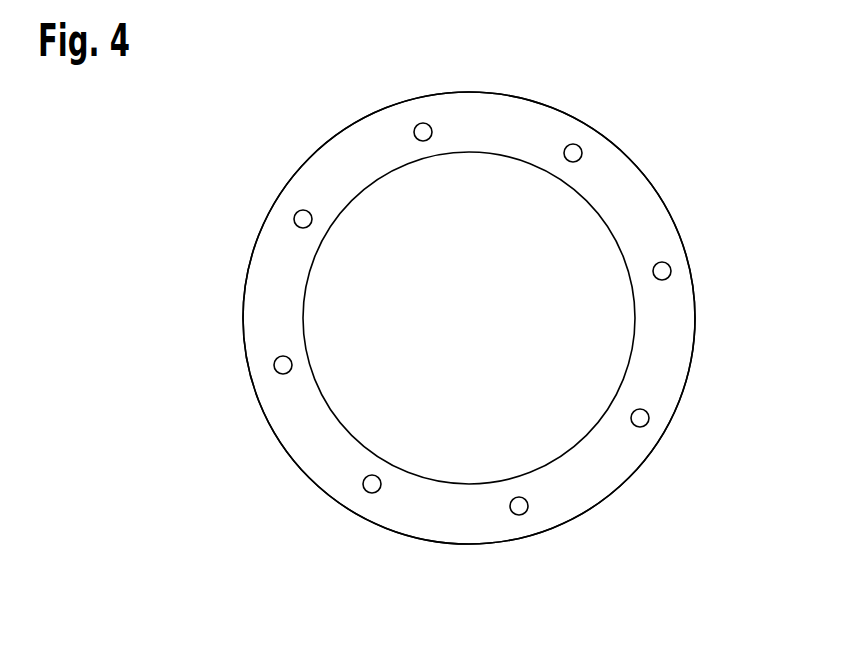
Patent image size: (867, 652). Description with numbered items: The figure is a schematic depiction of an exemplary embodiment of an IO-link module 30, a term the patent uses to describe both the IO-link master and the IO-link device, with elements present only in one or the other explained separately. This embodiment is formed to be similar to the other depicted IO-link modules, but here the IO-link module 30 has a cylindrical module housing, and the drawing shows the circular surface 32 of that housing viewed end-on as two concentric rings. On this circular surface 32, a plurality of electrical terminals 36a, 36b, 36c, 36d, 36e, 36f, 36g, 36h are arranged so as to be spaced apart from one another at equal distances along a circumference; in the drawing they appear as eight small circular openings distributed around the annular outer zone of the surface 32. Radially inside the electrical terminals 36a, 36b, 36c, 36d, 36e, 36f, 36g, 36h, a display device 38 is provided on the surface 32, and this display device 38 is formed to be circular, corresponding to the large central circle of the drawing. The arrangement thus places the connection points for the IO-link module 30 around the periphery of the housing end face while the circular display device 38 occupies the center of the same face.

The IO-link module 30 is at (132, 177).
The circular surface 32 is at (630, 200).
The display device 38 is at (600, 338).
The electrical terminal 36a is at (520, 515).
The electrical terminal 36b is at (648, 421).
The electrical terminal 36c is at (671, 270).
The electrical terminal 36d is at (577, 144).
The electrical terminal 36e is at (423, 123).
The electrical terminal 36f is at (294, 215).
The electrical terminal 36g is at (274, 365).
The electrical terminal 36h is at (368, 492).